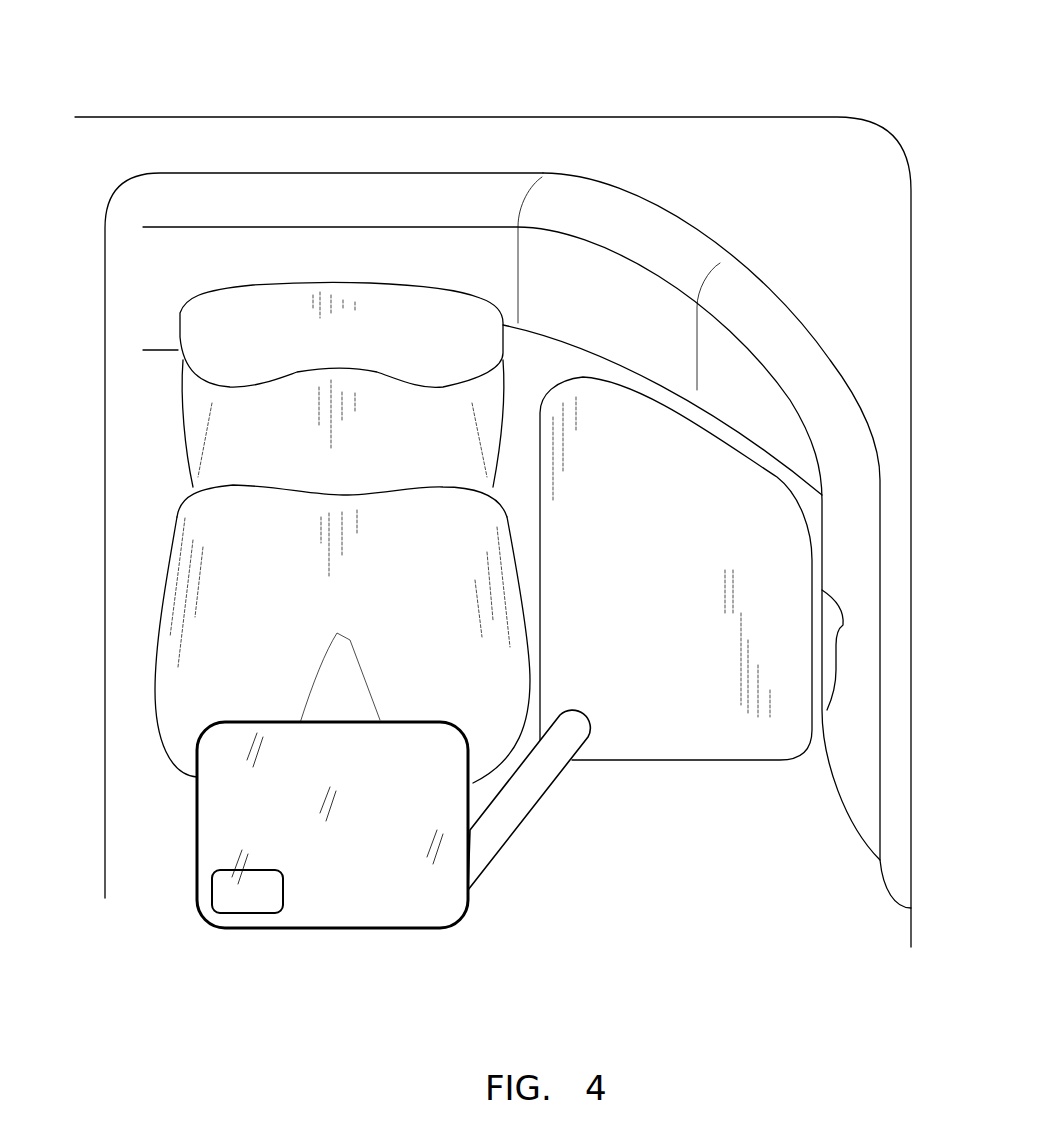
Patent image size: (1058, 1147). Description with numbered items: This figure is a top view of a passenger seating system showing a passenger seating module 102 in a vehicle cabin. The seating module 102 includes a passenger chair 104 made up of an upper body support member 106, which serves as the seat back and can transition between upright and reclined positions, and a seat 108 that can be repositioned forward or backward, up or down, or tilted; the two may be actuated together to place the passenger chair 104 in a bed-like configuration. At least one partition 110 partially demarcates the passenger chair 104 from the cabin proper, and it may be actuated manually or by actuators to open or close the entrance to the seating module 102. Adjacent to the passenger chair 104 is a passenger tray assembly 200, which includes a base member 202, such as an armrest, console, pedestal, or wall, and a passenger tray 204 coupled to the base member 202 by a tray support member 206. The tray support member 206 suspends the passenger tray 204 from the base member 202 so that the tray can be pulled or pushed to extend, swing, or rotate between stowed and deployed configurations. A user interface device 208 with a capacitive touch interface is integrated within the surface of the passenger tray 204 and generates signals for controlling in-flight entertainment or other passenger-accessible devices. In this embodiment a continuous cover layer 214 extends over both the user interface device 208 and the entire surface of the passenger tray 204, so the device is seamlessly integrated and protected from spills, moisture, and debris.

The passenger seating module 102 is at (692, 233).
The passenger chair 104 is at (382, 282).
The upper body support member 106 is at (217, 332).
The seat 108 is at (222, 523).
The partition 110 is at (105, 422).
The passenger tray assembly 200 is at (473, 892).
The base member 202 is at (698, 700).
The passenger tray 204 is at (373, 898).
The tray support member 206 is at (528, 793).
The user interface device 208 is at (247, 898).
The cover layer 214 is at (368, 893).